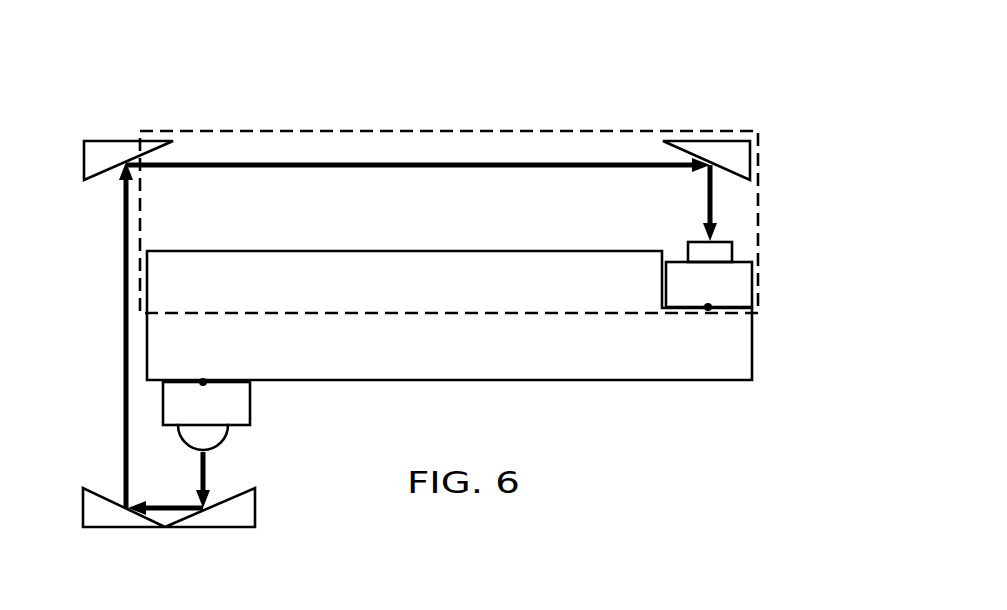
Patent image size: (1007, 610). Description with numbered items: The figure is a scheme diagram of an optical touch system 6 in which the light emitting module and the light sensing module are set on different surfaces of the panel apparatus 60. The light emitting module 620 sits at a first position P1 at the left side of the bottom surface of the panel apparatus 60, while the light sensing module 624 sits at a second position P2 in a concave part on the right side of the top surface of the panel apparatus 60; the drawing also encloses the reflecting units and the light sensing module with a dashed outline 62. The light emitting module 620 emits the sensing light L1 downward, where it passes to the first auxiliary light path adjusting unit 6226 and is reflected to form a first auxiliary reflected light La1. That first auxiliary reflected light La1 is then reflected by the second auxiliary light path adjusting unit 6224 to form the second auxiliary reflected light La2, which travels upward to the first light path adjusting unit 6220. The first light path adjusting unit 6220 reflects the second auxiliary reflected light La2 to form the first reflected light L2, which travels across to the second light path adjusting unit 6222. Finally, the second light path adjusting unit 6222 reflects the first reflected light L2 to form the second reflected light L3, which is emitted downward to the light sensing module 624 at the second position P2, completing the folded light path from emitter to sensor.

The optical touch system 6 is at (684, 46).
The panel apparatus 60 is at (147, 342).
The optical assembly 62 is at (760, 187).
The light emitting module 620 is at (163, 400).
The light sensing module 624 is at (754, 282).
The first light path adjusting unit 6220 is at (128, 140).
The second light path adjusting unit 6222 is at (663, 141).
The second auxiliary light path adjusting unit 6224 is at (125, 527).
The first auxiliary light path adjusting unit 6226 is at (240, 527).
The first position P1 is at (203, 382).
The second position P2 is at (708, 307).
The sensing light L1 is at (218, 480).
The first reflected light L2 is at (418, 181).
The second reflected light L3 is at (692, 203).
The first auxiliary reflected light La1 is at (165, 493).
The second auxiliary reflected light La2 is at (106, 335).